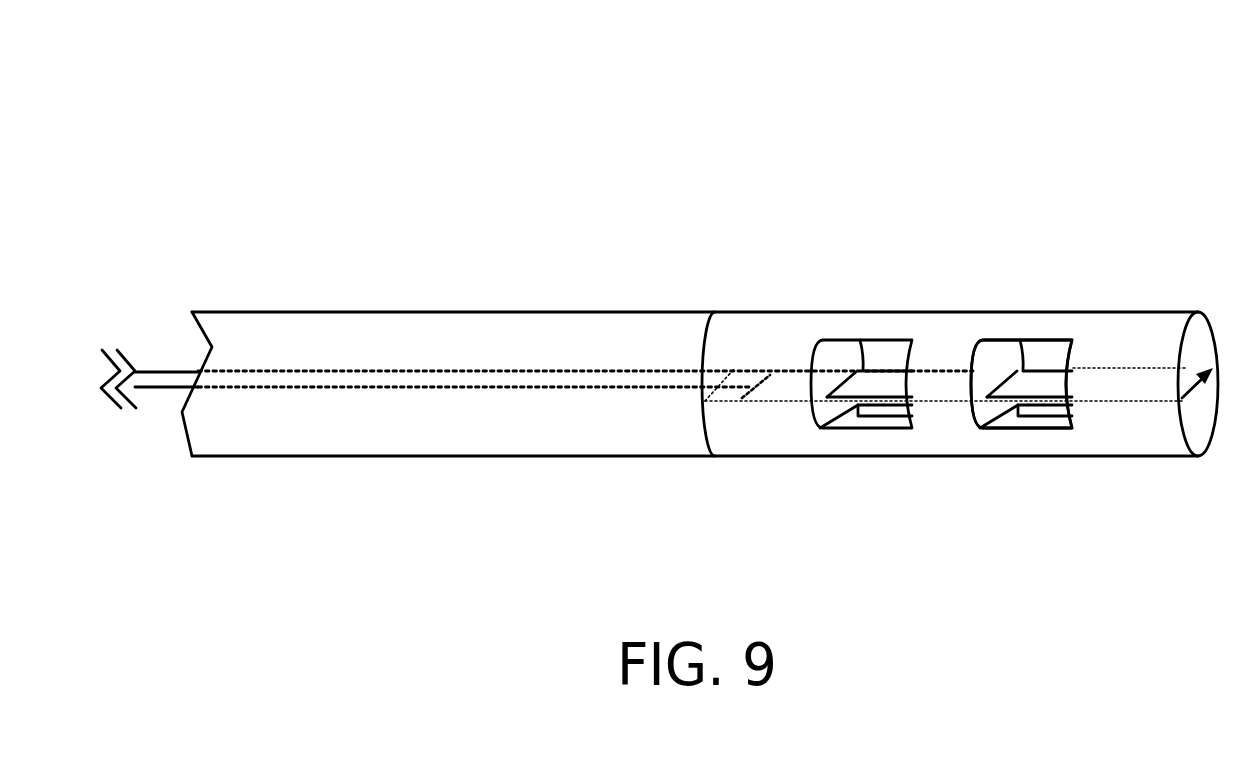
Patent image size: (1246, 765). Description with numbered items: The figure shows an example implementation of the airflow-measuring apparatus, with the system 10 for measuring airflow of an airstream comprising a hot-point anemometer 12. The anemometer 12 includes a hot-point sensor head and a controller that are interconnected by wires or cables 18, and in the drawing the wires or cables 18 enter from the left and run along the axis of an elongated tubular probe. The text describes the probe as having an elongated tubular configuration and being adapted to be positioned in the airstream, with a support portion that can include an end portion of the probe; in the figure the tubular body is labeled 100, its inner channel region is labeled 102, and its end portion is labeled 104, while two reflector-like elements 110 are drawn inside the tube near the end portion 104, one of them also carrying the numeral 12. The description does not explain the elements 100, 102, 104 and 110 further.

The system 10 is at (761, 147).
The hot-point anemometer 12 is at (1032, 383).
The wire(s) or cable(s) 18 is at (173, 385).
The tube 100 is at (495, 332).
The inner channel 102 is at (367, 348).
The distal end of tube 104 is at (1120, 348).
The reflector elements 110 is at (1015, 420).